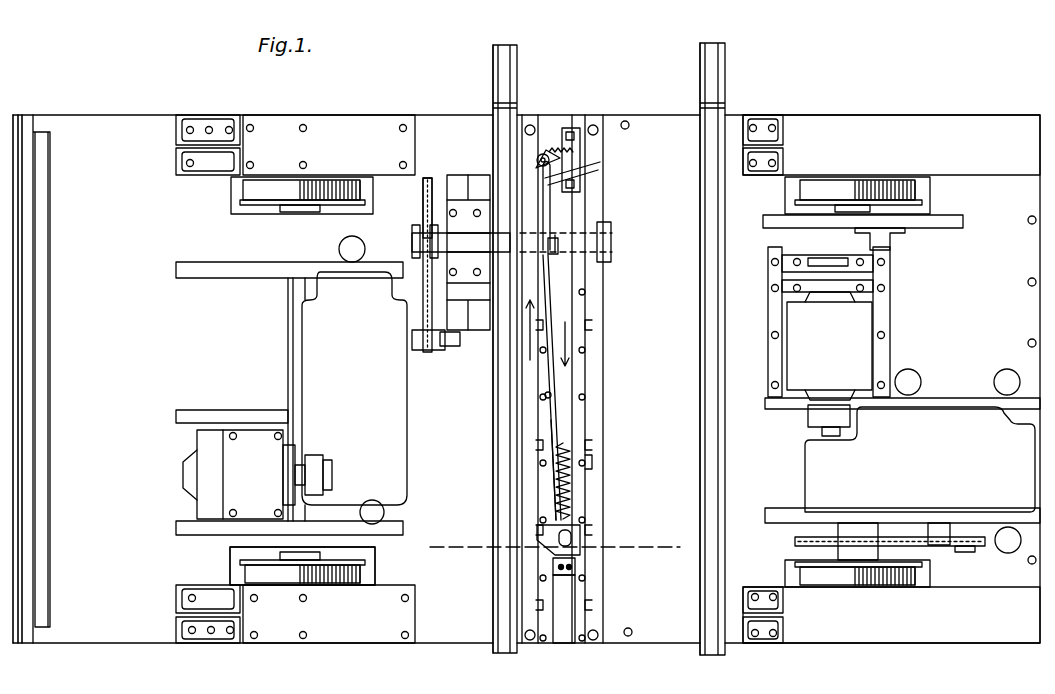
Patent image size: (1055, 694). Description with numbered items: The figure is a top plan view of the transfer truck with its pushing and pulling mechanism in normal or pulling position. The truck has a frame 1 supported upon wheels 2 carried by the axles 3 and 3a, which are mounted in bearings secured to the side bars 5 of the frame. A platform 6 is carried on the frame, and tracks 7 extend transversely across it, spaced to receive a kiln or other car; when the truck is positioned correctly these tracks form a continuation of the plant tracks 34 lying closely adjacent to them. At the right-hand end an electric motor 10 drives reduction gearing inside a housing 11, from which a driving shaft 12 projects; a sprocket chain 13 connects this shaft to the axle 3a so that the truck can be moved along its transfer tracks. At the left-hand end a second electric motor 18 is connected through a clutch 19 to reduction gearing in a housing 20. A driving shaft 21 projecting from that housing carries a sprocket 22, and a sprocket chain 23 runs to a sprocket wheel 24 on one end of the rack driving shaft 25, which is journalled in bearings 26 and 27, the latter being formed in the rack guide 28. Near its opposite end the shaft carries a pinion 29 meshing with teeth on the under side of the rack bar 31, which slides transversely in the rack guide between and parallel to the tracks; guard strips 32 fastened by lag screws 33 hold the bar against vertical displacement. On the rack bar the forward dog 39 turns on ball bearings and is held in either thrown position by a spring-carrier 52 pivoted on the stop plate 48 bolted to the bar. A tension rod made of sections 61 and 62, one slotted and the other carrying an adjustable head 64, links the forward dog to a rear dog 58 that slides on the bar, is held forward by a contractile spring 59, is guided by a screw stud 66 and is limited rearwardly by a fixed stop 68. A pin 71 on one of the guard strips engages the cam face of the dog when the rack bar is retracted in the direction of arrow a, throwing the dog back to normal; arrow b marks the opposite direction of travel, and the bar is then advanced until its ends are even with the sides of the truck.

The frame 1 is at (526, 379).
The wheels 2 is at (243, 190).
The axle 3 is at (345, 552).
The axle 3a is at (855, 528).
The side bars 5 is at (552, 542).
The platform 6 is at (595, 379).
The tracks 7 is at (505, 488).
The electric motor 10 is at (829, 341).
The housing 11 is at (920, 459).
The driving shaft 12 is at (960, 524).
The sprocket chain 13 is at (905, 540).
The electric motor 18 is at (242, 443).
The clutch 19 is at (330, 475).
The housing 20 is at (354, 398).
The driving shaft 21 is at (438, 343).
The sprocket 22 is at (428, 358).
The sprocket chain 23 is at (430, 186).
The sprocket wheel 24 is at (412, 233).
The rack driving shaft 25 is at (455, 242).
The bearing 26 is at (460, 262).
The bearing 27 is at (603, 230).
The rack guide 28 is at (590, 362).
The pinion 29 is at (572, 245).
The rack bar 31 is at (560, 402).
The guard strips 32 is at (585, 425).
The lag screws 33 is at (585, 462).
The plant tracks 34 is at (503, 82).
The forward dog 39 is at (550, 152).
The stop plate 48 is at (585, 135).
The spring-carrier 52 is at (575, 180).
The rear dog 58 is at (545, 545).
The contractile spring 59 is at (565, 480).
The tension rod section 61 is at (543, 168).
The tension rod section 62 is at (548, 426).
The head 64 is at (556, 252).
The screw stud 66 is at (575, 545).
The fixed stop 68 is at (575, 568).
The pin 71 is at (545, 395).
The arrow a is at (562, 338).
The direction arrow b is at (532, 332).